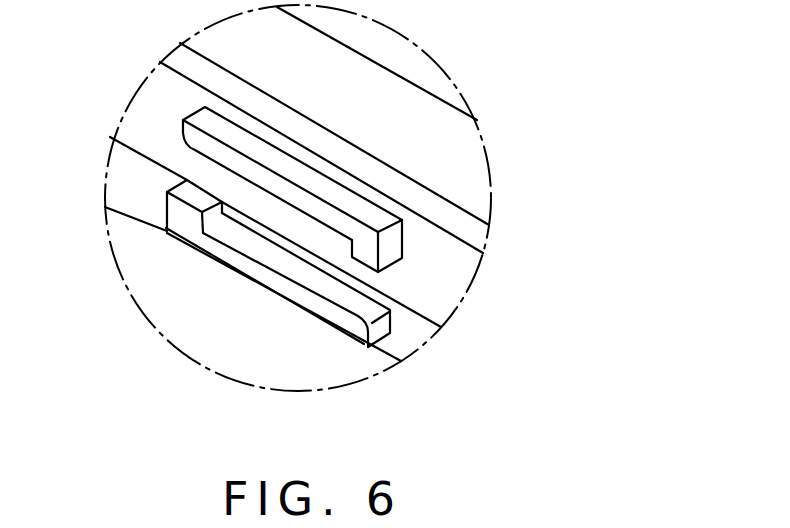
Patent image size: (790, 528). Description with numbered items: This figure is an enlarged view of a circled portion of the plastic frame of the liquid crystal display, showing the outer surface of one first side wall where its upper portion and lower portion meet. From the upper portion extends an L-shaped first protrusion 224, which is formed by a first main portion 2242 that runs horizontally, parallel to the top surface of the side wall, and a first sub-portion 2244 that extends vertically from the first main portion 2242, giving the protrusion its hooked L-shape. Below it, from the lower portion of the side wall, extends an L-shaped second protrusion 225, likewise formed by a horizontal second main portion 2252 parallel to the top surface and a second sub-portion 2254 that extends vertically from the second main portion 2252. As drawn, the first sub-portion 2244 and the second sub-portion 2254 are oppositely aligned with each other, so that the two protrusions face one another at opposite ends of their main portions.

The first protrusion 224 is at (615, 120).
The first main portion 2242 is at (325, 210).
The first sub-portion 2244 is at (367, 252).
The second protrusion 225 is at (193, 435).
The second main portion 2252 is at (238, 262).
The second sub-portion 2254 is at (182, 213).